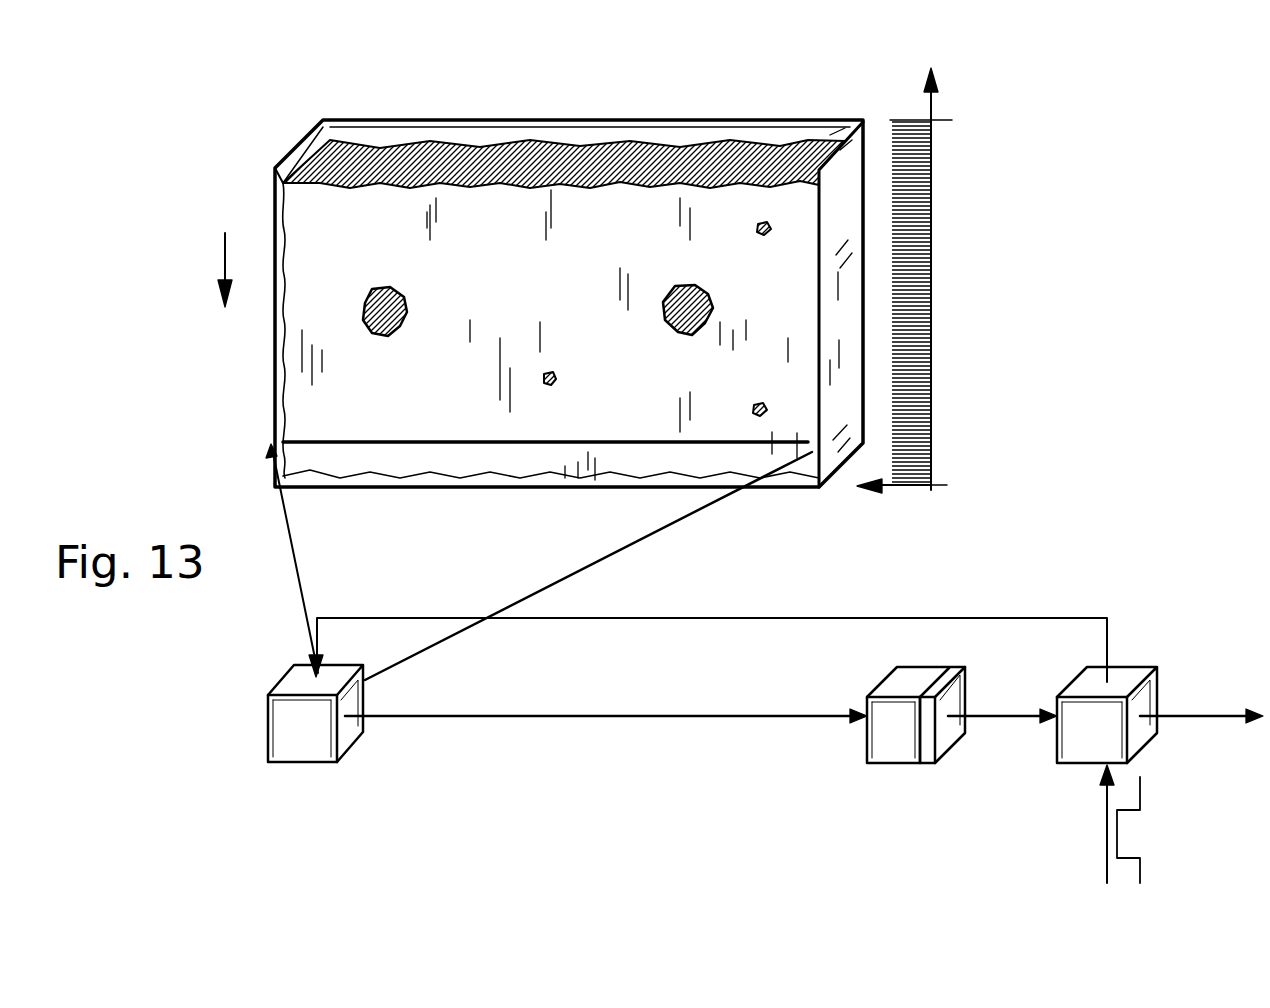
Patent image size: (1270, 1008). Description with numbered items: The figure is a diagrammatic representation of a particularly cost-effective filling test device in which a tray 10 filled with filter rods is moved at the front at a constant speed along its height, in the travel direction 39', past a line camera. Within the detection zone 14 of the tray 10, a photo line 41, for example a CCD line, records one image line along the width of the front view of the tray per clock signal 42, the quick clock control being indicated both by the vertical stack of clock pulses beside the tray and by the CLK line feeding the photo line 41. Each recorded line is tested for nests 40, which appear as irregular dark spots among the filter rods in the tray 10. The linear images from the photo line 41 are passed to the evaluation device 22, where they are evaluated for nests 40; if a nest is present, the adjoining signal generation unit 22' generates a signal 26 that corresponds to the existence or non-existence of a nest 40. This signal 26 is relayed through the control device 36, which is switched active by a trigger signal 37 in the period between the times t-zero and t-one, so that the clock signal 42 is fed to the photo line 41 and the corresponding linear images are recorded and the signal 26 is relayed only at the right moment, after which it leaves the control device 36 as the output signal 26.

The tray 10 is at (840, 197).
The detection zone 14 is at (433, 442).
The travel direction 39' is at (185, 266).
The nests 40 is at (400, 293).
The clock signal 42 is at (918, 325).
The photo line 41 is at (310, 738).
The evaluation device 22 is at (885, 753).
The signal generation unit 22' is at (921, 753).
The signal 26 is at (992, 720).
The control device 36 is at (1080, 733).
The trigger signal 37 is at (1105, 810).